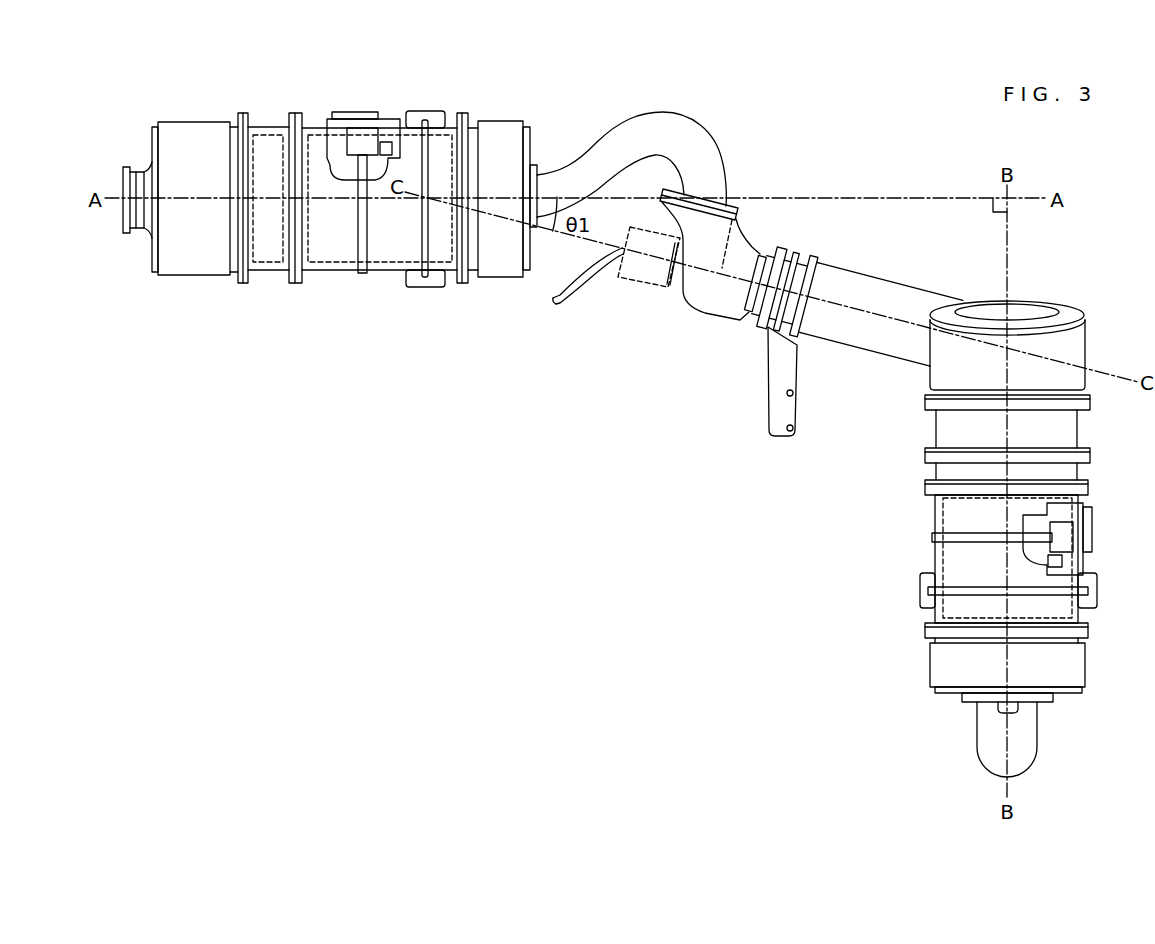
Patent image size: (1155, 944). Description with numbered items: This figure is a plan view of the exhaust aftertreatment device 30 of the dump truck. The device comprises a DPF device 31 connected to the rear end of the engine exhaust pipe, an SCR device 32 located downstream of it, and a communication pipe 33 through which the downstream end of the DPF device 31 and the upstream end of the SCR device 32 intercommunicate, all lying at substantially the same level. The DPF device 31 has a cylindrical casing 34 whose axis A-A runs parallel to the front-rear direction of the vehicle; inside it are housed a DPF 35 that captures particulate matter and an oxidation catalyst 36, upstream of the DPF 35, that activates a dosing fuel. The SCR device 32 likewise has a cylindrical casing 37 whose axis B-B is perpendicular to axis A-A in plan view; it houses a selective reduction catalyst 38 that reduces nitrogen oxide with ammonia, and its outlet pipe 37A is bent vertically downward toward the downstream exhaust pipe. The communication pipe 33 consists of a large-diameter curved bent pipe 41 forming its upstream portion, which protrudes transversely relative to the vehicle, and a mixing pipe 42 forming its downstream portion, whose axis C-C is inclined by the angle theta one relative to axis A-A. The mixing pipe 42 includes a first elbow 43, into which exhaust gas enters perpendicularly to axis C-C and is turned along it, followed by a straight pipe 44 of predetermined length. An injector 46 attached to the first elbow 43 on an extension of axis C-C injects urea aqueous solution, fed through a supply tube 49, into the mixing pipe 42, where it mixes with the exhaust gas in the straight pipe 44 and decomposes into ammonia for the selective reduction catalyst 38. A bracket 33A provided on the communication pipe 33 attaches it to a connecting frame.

The exhaust aftertreatment device 30 is at (592, 378).
The DPF device 31 is at (216, 122).
The SCR device 32 is at (1078, 472).
The communication pipe 33 is at (828, 272).
The bracket 33A is at (770, 410).
The cylindrical casing 34 is at (192, 277).
The DPF 35 is at (336, 270).
The oxidation catalyst 36 is at (268, 270).
The cylindrical casing 37 is at (948, 665).
The outlet pipe 37A is at (983, 742).
The selective reduction catalyst 38 is at (948, 557).
The bent pipe 41 is at (672, 118).
The mixing pipe 42 is at (915, 295).
The first elbow 43 is at (742, 240).
The straight pipe 44 is at (868, 283).
The injector 46 is at (640, 285).
The supply tube 49 is at (570, 303).